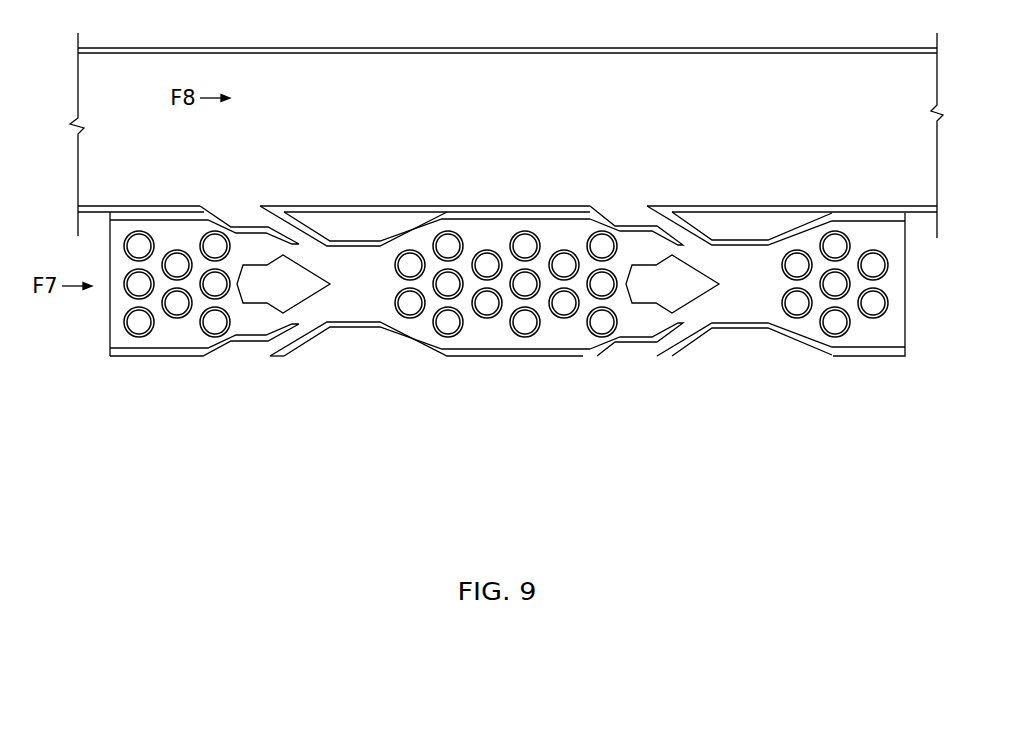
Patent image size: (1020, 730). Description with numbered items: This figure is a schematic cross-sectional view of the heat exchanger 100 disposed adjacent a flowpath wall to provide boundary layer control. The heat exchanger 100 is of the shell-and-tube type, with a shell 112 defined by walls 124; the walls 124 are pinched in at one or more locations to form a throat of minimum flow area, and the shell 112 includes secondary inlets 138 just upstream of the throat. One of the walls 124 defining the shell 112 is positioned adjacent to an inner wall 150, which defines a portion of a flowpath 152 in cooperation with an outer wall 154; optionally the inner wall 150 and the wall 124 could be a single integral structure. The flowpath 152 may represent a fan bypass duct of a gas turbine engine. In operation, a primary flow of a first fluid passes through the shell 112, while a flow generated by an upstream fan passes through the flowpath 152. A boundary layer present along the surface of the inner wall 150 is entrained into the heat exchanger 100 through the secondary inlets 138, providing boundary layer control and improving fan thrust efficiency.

The heat exchanger 100 is at (506, 297).
The shell 112 is at (857, 357).
The walls 124 is at (752, 242).
The secondary inlets 138 is at (222, 221).
The inner wall 150 is at (203, 260).
The flowpath 152 is at (538, 124).
The outer wall 154 is at (269, 48).